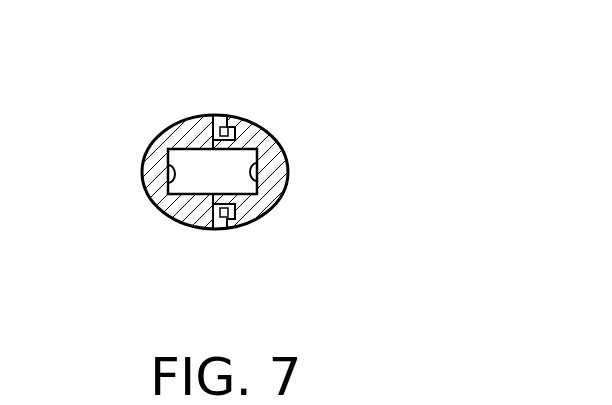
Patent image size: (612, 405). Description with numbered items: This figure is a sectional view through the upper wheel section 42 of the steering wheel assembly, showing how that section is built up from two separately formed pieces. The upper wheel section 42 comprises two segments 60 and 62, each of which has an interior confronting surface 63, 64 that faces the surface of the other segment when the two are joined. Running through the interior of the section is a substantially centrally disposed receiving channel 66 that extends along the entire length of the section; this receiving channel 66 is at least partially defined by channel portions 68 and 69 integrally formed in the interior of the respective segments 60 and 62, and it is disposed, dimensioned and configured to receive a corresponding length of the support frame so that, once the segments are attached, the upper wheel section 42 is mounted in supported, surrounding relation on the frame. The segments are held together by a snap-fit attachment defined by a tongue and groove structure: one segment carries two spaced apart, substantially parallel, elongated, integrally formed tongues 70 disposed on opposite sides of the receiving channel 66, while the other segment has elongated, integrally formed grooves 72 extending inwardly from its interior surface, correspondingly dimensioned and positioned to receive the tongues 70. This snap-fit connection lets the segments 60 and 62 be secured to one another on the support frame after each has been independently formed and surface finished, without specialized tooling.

The upper wheel section 42 is at (333, 72).
The segment 60 is at (289, 156).
The segment 62 is at (160, 137).
The interior confronting surface 63 is at (200, 229).
The interior confronting surface 64 is at (222, 117).
The receiving channel 66 is at (202, 182).
The channel portion 68 is at (247, 171).
The channel portion 69 is at (168, 180).
The tongue 70 is at (230, 120).
The groove 72 is at (238, 134).